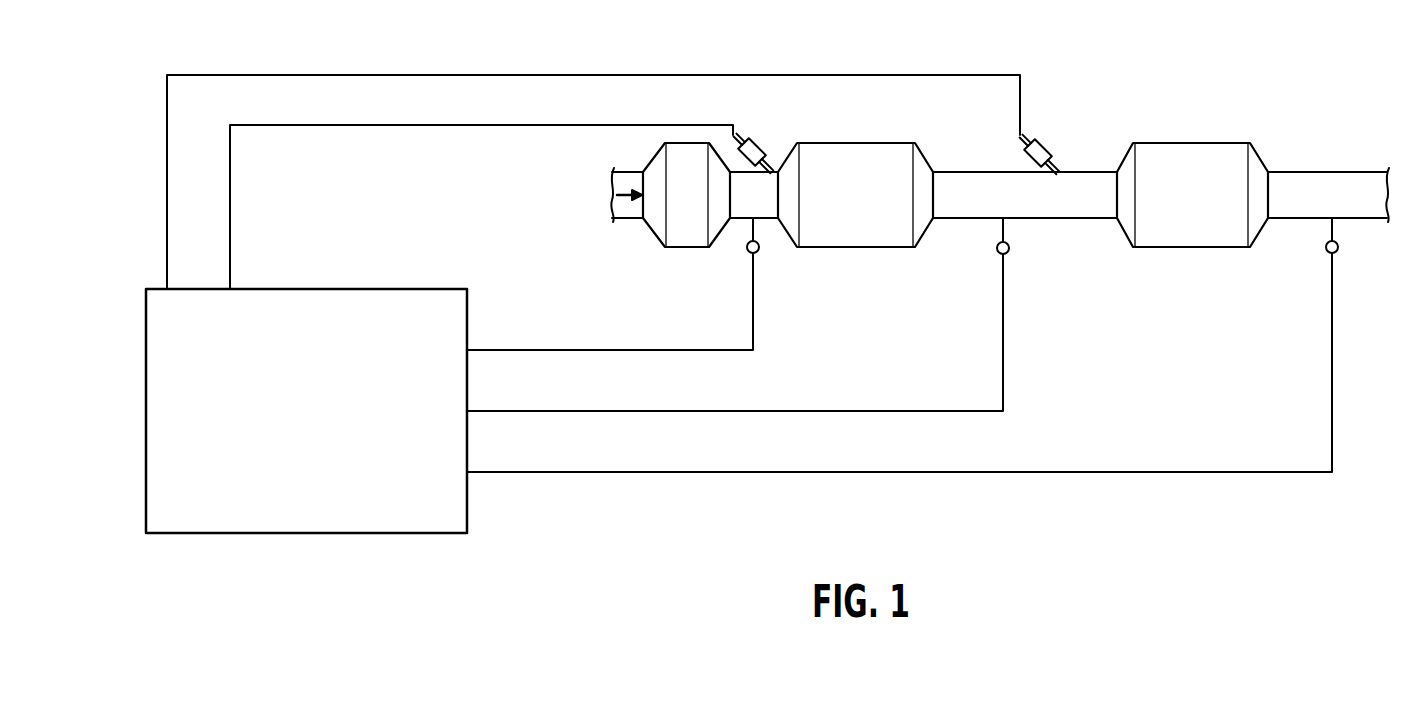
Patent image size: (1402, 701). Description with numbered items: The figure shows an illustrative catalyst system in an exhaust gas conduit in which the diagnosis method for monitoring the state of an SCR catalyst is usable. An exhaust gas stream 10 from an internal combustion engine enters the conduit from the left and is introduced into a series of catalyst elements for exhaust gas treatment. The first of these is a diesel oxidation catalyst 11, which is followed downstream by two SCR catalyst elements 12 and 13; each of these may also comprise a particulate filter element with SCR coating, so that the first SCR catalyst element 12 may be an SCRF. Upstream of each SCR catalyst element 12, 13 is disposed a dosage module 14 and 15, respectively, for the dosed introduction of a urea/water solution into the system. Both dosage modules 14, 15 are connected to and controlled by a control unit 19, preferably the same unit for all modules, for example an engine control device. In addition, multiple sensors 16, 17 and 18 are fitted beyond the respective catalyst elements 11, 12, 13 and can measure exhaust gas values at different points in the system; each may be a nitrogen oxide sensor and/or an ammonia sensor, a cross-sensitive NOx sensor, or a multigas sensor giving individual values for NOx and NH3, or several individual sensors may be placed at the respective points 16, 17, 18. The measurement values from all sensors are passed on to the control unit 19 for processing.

The exhaust gas stream 10 is at (618, 185).
The diesel oxidation catalyst 11 is at (690, 152).
The SCR catalyst element 12 is at (855, 152).
The SCR catalyst element 13 is at (1194, 152).
The dosage module 14 is at (752, 146).
The dosage module 15 is at (1039, 146).
The sensor 16 is at (747, 250).
The sensor 17 is at (997, 250).
The sensor 18 is at (1326, 250).
The control unit 19 is at (321, 427).